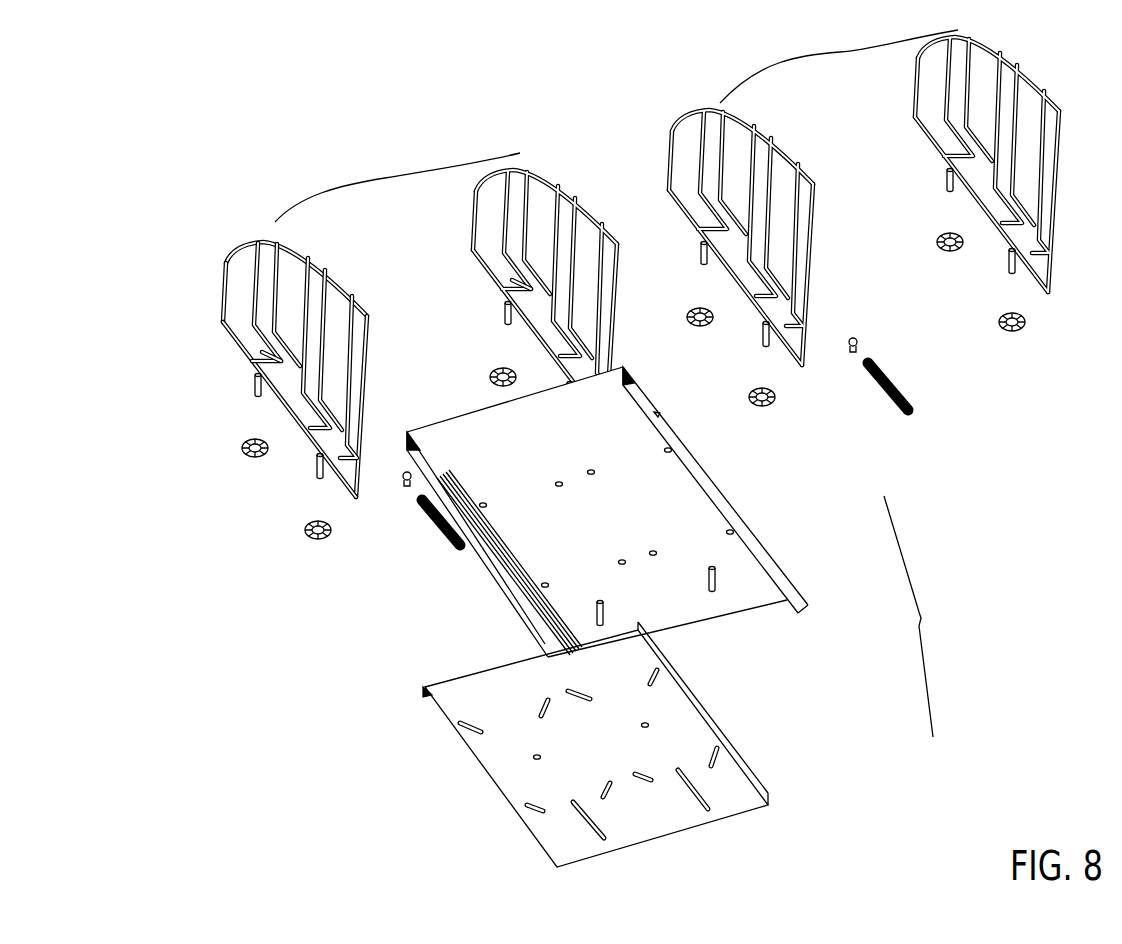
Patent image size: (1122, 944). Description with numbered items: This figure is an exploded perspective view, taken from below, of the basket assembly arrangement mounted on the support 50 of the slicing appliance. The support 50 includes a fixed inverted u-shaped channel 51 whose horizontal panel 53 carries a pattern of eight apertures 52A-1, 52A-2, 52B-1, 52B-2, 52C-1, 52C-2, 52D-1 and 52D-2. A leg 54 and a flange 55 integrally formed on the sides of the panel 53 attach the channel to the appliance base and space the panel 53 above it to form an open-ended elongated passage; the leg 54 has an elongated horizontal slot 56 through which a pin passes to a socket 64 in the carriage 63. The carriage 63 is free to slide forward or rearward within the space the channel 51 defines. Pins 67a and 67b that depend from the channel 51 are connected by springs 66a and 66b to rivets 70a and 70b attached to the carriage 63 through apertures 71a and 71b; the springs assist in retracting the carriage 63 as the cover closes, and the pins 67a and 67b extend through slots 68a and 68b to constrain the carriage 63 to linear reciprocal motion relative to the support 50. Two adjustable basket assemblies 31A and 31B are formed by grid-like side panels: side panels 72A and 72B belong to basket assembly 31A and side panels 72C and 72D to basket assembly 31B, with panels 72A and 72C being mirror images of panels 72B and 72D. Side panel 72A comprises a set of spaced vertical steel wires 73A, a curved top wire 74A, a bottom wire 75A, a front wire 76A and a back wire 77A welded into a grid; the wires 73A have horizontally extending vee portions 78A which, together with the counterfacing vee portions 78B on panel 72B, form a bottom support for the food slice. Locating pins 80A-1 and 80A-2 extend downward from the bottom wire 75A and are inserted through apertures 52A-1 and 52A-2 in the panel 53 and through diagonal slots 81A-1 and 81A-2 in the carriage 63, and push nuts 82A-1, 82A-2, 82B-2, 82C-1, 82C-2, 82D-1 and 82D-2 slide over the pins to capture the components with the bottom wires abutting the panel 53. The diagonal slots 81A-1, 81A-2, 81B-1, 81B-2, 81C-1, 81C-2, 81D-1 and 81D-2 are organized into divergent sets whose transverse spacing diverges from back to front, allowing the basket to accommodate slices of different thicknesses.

The adjustable basket assembly 31A is at (397, 187).
The adjustable basket assembly 31B is at (839, 65).
The support 50 is at (917, 616).
The fixed inverted u-shaped channel 51 is at (602, 511).
The aperture 52A-1 is at (544, 589).
The aperture 52A-2 is at (481, 508).
The aperture 52B-1 is at (624, 559).
The aperture 52B-2 is at (558, 480).
The aperture 52C-1 is at (657, 551).
The aperture 52C-2 is at (594, 470).
The aperture 52D-1 is at (735, 533).
The aperture 52D-2 is at (673, 450).
The horizontal panel 53 is at (738, 604).
The leg 54 is at (425, 440).
The flange 55 is at (483, 560).
The elongated horizontal slot 56 is at (505, 583).
The carriage 63 is at (589, 762).
The socket 64 is at (734, 748).
The spring 66a is at (432, 520).
The spring 66b is at (900, 397).
The pin 67a is at (597, 624).
The pin 67b is at (716, 583).
The slot 68a is at (598, 838).
The slot 68b is at (706, 810).
The rivet 70a is at (398, 488).
The rivet 70b is at (862, 345).
The aperture 71a is at (537, 761).
The aperture 71b is at (650, 724).
The grid-like side panel 72A is at (270, 352).
The grid-like side panel 72B is at (548, 174).
The grid-like side panel 72C is at (762, 130).
The grid-like side panel 72D is at (1022, 50).
The spaced vertical steel wires 73A is at (253, 305).
The curved top wire 74A is at (322, 256).
The bottom wire 75A is at (240, 348).
The front wire 76A is at (225, 265).
The back wire 77A is at (365, 355).
The vee portions 78A is at (262, 362).
The vee portions 78B is at (558, 338).
The locating pin 80A-1 is at (256, 394).
The locating pin 80A-2 is at (317, 478).
The diagonal slot 81A-1 is at (537, 812).
The diagonal slot 81A-2 is at (470, 734).
The diagonal slot 81B-1 is at (612, 800).
The diagonal slot 81B-2 is at (538, 707).
The diagonal slot 81C-1 is at (646, 786).
The diagonal slot 81C-2 is at (580, 690).
The diagonal slot 81D-1 is at (720, 760).
The diagonal slot 81D-2 is at (660, 677).
The push nut 82A-1 is at (314, 540).
The push nut 82A-2 is at (241, 448).
The push nut 82B-2 is at (489, 377).
The push nut 82C-1 is at (757, 408).
The push nut 82C-2 is at (696, 307).
The push nut 82D-1 is at (1016, 332).
The push nut 82D-2 is at (936, 242).